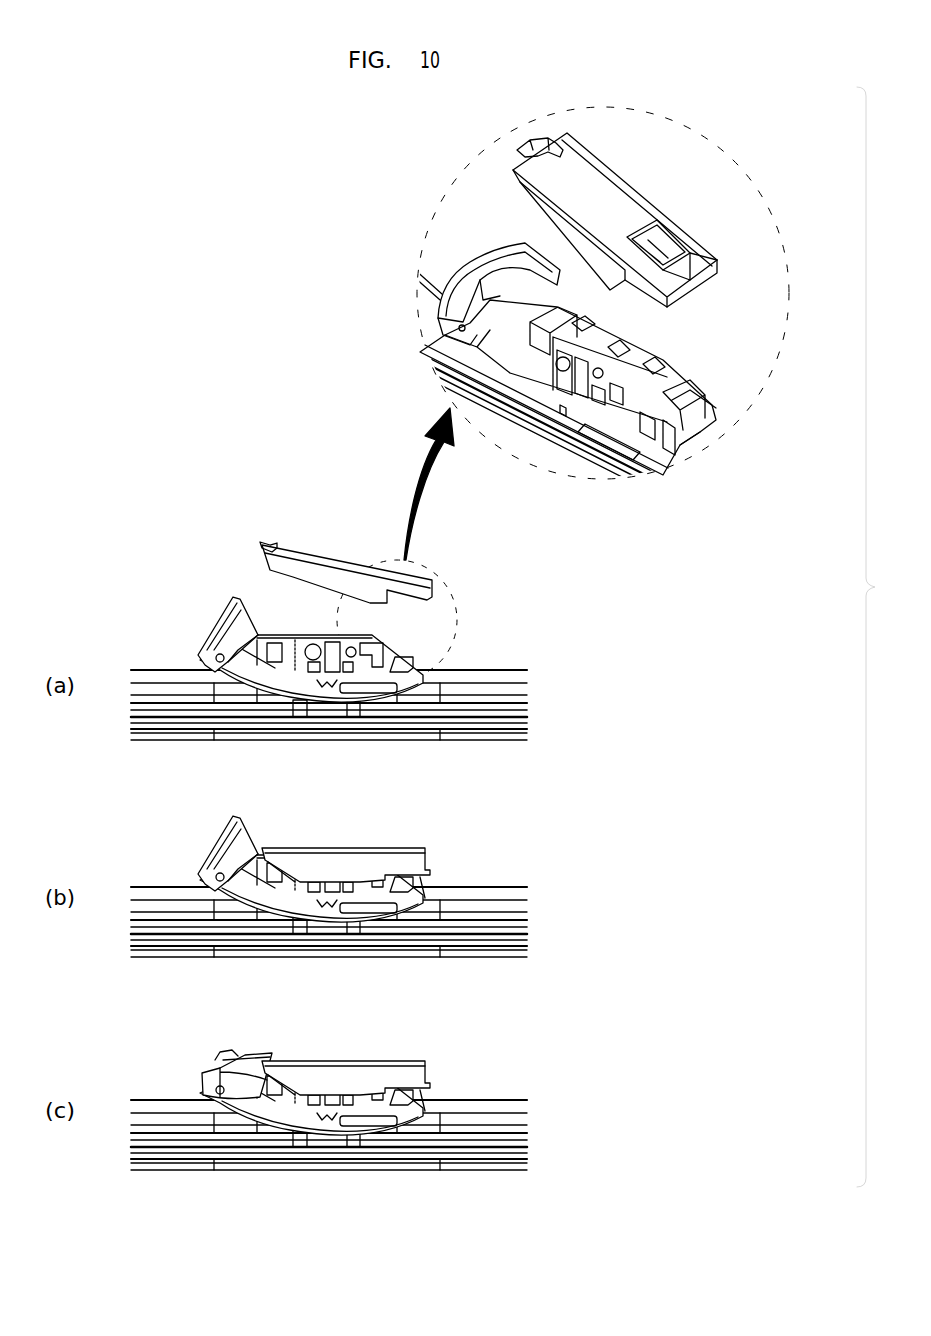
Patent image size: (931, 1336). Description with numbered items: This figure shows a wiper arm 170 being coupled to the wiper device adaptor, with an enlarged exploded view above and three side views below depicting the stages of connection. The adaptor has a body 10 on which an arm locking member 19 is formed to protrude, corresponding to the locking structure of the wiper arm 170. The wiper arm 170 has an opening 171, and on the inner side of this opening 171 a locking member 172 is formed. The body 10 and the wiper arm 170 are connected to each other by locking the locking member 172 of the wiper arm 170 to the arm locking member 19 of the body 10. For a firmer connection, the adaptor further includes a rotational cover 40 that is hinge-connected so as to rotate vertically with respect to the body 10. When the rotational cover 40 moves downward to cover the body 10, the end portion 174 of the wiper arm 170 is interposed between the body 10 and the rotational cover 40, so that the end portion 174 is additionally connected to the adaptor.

The body 10 is at (717, 413).
The arm locking member 19 is at (660, 370).
The rotational cover 40 is at (468, 259).
The wiper arm 170 is at (603, 187).
The opening 171 is at (640, 225).
The locking member 172 is at (688, 233).
The end portion 174 is at (535, 140).